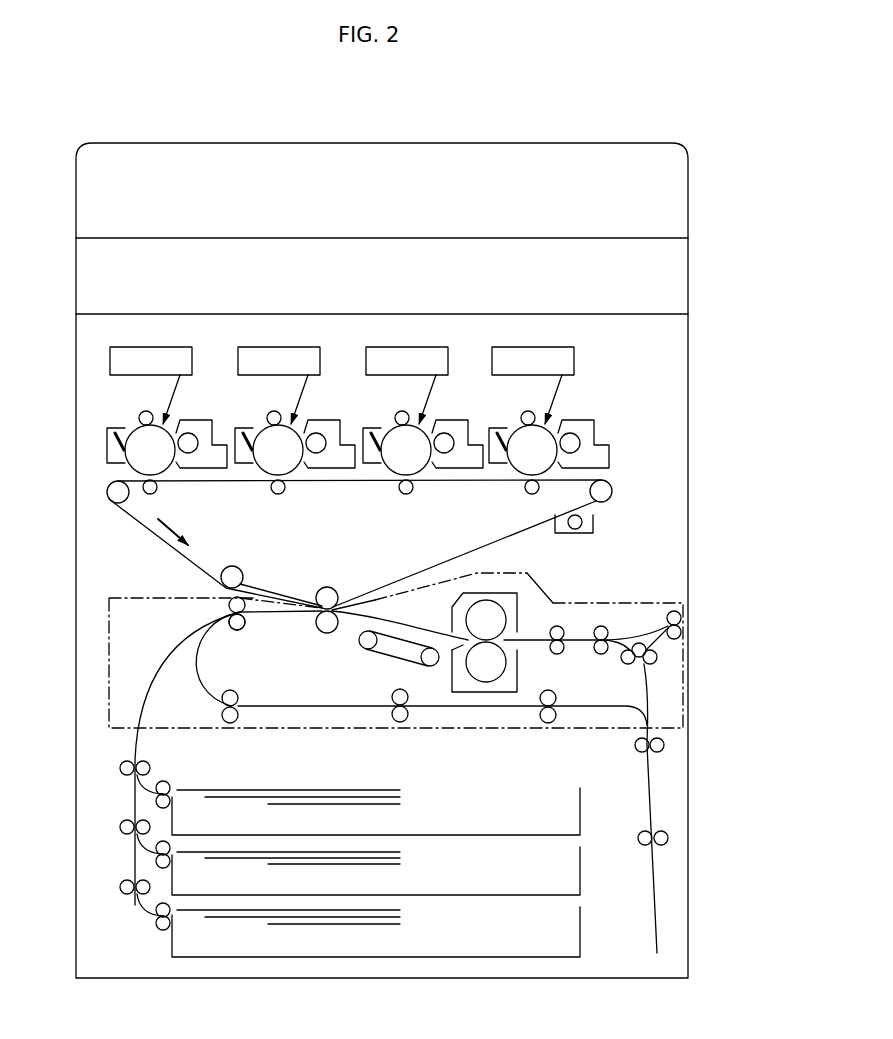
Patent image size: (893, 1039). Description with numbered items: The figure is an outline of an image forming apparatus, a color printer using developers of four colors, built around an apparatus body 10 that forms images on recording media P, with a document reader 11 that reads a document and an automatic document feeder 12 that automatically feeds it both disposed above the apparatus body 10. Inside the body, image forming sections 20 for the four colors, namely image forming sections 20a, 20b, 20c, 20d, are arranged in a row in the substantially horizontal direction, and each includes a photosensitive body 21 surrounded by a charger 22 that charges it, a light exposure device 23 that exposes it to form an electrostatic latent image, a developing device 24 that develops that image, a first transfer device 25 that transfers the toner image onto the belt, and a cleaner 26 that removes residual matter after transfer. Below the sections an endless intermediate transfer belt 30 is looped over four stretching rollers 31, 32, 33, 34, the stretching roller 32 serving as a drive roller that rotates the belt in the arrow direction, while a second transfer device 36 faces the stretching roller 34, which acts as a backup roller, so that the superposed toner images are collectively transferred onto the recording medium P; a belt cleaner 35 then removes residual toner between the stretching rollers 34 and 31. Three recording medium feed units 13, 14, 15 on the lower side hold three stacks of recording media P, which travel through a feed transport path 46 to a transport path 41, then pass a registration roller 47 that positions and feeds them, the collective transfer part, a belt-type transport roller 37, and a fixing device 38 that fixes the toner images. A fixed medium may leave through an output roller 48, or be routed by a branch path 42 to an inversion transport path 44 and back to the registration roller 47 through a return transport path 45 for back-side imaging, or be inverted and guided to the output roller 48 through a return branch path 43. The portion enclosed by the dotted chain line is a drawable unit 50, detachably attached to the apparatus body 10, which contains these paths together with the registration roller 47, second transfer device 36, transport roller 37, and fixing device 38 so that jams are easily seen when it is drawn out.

The apparatus body 10 is at (690, 356).
The document reader 11 is at (690, 258).
The automatic document feeder 12 is at (690, 180).
The recording medium feed unit 13 is at (570, 805).
The recording medium feed unit 14 is at (570, 858).
The recording medium feed unit 15 is at (570, 917).
The image forming sections 20 is at (381, 402).
The image forming section 20a is at (532, 402).
The image forming section 20b is at (441, 407).
The image forming section 20c is at (313, 407).
The image forming section 20d is at (185, 407).
The photosensitive body 21 is at (518, 440).
The charger 22 is at (524, 418).
The light exposure device 23 is at (561, 347).
The developing device 24 is at (590, 432).
The first transfer device 25 is at (531, 490).
The cleaner 26 is at (491, 445).
The intermediate transfer belt 30 is at (160, 528).
The stretching roller 31 is at (612, 486).
The stretching roller 32 is at (110, 493).
The stretching roller 33 is at (244, 574).
The stretching roller 34 is at (331, 589).
The belt cleaner 35 is at (600, 523).
The second transfer device 36 is at (317, 623).
The belt-type transport roller 37 is at (390, 649).
The fixing device 38 is at (520, 604).
The transport path 41 is at (236, 618).
The branch path 42 is at (620, 644).
The return branch path 43 is at (653, 642).
The inversion transport path 44 is at (652, 794).
The return transport path 45 is at (458, 708).
The feed transport path 46 is at (135, 750).
The registration roller 47 is at (243, 623).
The output roller 48 is at (673, 612).
The drawable unit 50 is at (633, 600).
The recording medium P is at (363, 790).